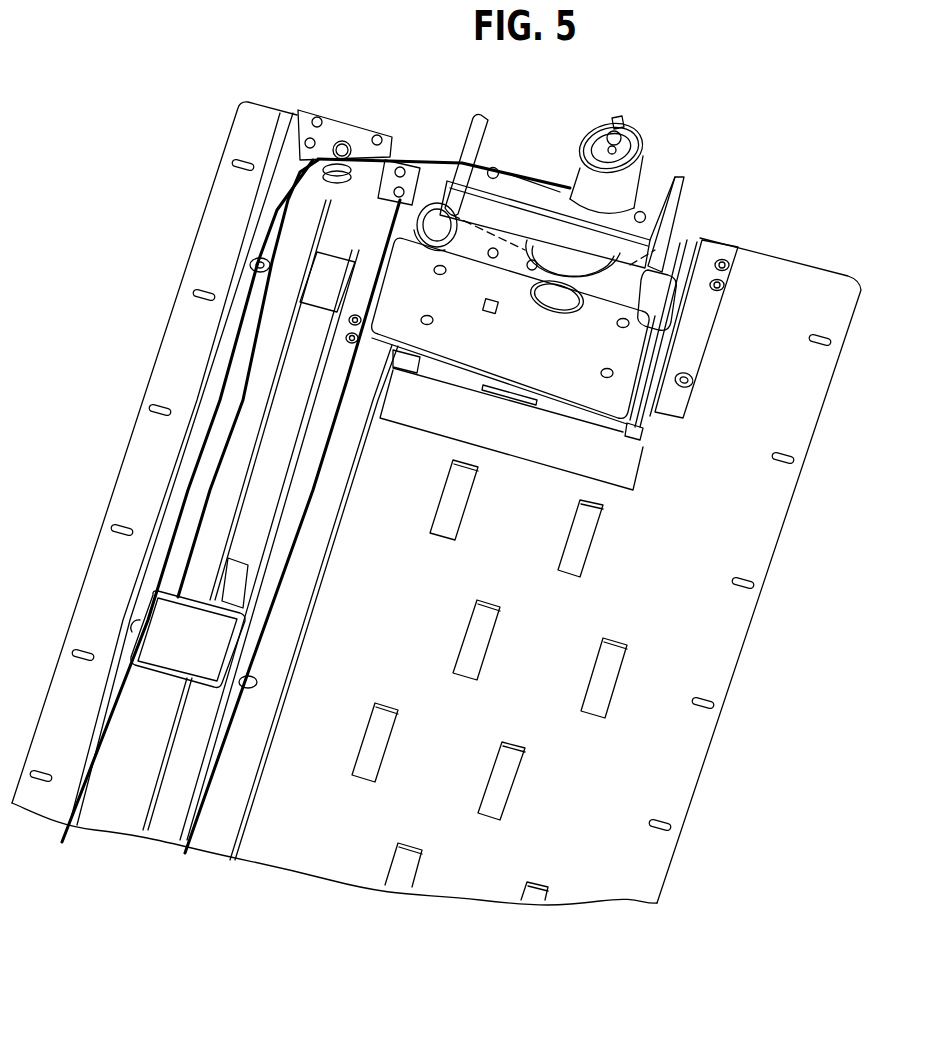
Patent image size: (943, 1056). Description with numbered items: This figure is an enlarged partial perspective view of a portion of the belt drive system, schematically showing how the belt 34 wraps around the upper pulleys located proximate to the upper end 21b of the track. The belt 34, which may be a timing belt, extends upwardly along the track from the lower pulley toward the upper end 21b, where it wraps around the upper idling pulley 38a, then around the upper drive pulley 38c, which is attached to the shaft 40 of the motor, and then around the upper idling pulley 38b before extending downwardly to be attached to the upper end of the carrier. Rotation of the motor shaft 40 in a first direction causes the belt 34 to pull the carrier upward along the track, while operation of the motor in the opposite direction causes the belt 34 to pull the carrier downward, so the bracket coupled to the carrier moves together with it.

The upper end of the track 21b is at (250, 114).
The belt 34 is at (190, 470).
The upper idling pulley 38a is at (335, 152).
The upper idling pulley 38b is at (445, 200).
The upper drive pulley 38c is at (680, 300).
The shaft of the motor 40 is at (568, 185).